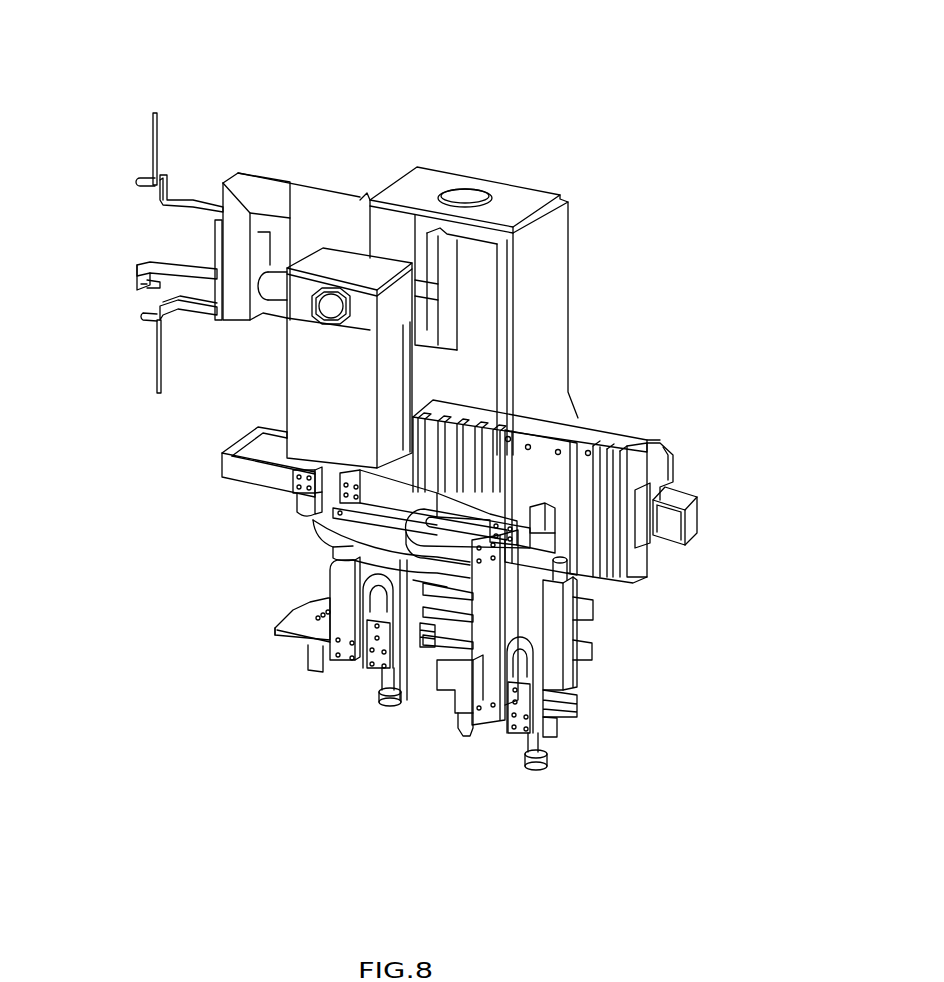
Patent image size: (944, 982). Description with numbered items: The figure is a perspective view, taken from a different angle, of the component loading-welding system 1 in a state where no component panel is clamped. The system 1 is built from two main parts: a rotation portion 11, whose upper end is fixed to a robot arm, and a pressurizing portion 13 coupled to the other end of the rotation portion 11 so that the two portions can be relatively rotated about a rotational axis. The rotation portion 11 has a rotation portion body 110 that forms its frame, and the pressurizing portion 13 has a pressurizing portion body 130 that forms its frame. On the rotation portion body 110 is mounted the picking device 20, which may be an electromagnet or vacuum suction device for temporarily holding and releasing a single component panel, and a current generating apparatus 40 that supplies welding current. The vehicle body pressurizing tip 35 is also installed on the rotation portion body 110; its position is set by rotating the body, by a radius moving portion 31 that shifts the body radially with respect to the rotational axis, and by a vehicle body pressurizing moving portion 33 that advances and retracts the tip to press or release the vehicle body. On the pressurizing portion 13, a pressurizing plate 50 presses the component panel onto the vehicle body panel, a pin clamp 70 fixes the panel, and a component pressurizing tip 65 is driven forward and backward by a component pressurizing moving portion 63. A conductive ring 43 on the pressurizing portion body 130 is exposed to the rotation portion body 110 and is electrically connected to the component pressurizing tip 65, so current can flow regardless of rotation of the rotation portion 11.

The component loading-welding system 1 is at (544, 84).
The rotation portion 11 is at (97, 163).
The pressurizing portion 13 is at (97, 521).
The picking device 20 is at (207, 198).
The rotation portion body 110 is at (563, 280).
The current generating apparatus 40 is at (363, 370).
The conductive ring 43 is at (303, 516).
The pressurizing portion body 130 is at (335, 547).
The pressurizing plate 50 is at (337, 657).
The component pressurizing moving portion 63 is at (413, 665).
The component pressurizing tip 65 is at (395, 703).
The pin clamp 70 is at (468, 736).
The vehicle body pressurizing moving portion 33 is at (558, 637).
The vehicle body pressurizing tip 35 is at (543, 760).
The radius moving portion 31 is at (697, 515).